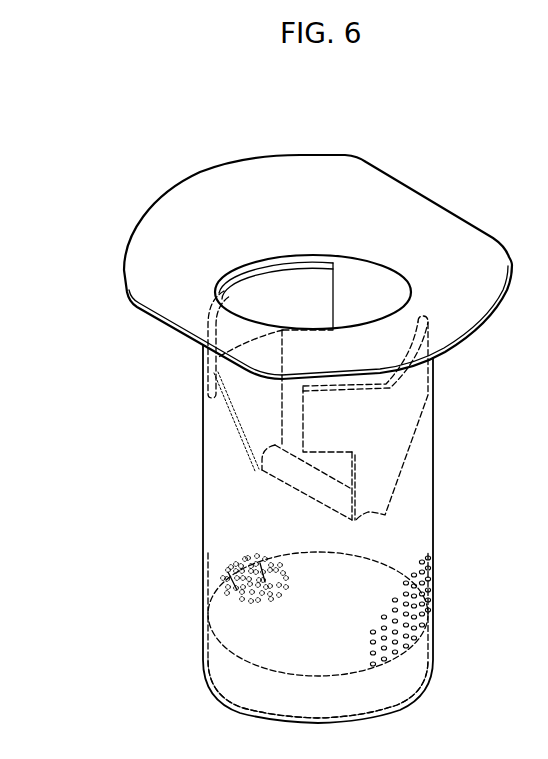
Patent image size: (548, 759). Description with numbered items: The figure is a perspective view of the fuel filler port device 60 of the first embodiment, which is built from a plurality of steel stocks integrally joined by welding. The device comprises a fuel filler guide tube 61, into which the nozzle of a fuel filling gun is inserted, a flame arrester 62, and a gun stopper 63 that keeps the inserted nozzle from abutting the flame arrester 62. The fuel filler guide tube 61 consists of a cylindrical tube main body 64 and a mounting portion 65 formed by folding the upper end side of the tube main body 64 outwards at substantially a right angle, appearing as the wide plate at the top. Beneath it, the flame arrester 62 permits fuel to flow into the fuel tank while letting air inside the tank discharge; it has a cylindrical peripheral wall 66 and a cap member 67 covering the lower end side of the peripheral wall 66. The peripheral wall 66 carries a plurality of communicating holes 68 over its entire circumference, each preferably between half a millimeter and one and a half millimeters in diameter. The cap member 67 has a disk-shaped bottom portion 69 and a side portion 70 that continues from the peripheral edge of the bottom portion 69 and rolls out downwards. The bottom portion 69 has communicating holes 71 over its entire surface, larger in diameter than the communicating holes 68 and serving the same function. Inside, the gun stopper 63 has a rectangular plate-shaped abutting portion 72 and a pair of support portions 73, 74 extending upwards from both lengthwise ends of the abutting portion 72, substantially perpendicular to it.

The fuel filler port device 60 is at (118, 142).
The fuel filler guide tube 61 is at (63, 223).
The flame arrester 62 is at (115, 588).
The gun stopper 63 is at (412, 464).
The tube main body 64 is at (240, 255).
The mounting portion 65 is at (140, 274).
The peripheral wall 66 is at (203, 592).
The cap member 67 is at (152, 617).
The communicating holes 68 is at (413, 618).
The bottom portion 69 is at (230, 629).
The side portion 70 is at (229, 662).
The communicating holes 71 is at (262, 557).
The abutting portion 72 is at (300, 481).
The support portion 73 is at (251, 425).
The support portion 74 is at (385, 470).